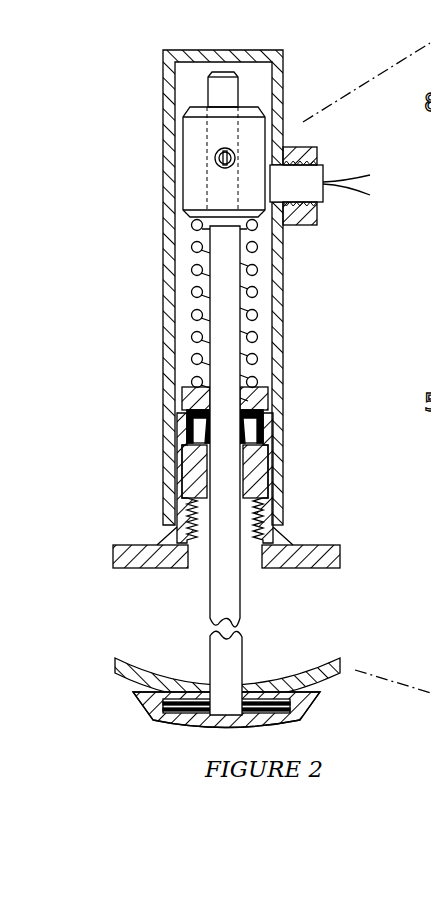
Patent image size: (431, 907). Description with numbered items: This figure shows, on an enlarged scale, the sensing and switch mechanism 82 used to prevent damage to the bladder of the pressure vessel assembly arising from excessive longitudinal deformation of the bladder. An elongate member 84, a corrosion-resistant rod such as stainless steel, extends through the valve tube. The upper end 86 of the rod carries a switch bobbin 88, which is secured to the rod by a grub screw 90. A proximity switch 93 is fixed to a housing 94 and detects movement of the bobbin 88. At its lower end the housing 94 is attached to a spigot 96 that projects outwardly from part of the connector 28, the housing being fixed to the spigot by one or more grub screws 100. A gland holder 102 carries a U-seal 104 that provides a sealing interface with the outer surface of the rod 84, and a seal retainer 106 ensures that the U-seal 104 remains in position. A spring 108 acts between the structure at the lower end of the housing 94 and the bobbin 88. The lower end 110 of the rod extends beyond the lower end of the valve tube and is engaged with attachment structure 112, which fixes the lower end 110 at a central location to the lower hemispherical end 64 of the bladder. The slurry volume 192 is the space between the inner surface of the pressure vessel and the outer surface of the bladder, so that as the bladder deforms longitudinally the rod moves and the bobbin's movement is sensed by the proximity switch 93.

The connector 28 is at (308, 557).
The lower hemispherical end of the bladder 64 is at (320, 680).
The sensing and switch mechanism 82 is at (188, 287).
The elongate member 84 is at (232, 602).
The upper end of the rod 86 is at (238, 80).
The switch bobbin 88 is at (250, 137).
The grub screw 90 is at (213, 157).
The proximity switch 93 is at (322, 203).
The housing 94 is at (275, 350).
The spigot 96 is at (270, 515).
The grub screws 100 is at (233, 484).
The gland holder 102 is at (257, 478).
The U-seal 104 is at (265, 437).
The seal retainer 106 is at (267, 395).
The spring 108 is at (250, 293).
The lower end of the rod 110 is at (223, 665).
The attachment structure 112 is at (186, 728).
The slurry volume 192 is at (430, 133).